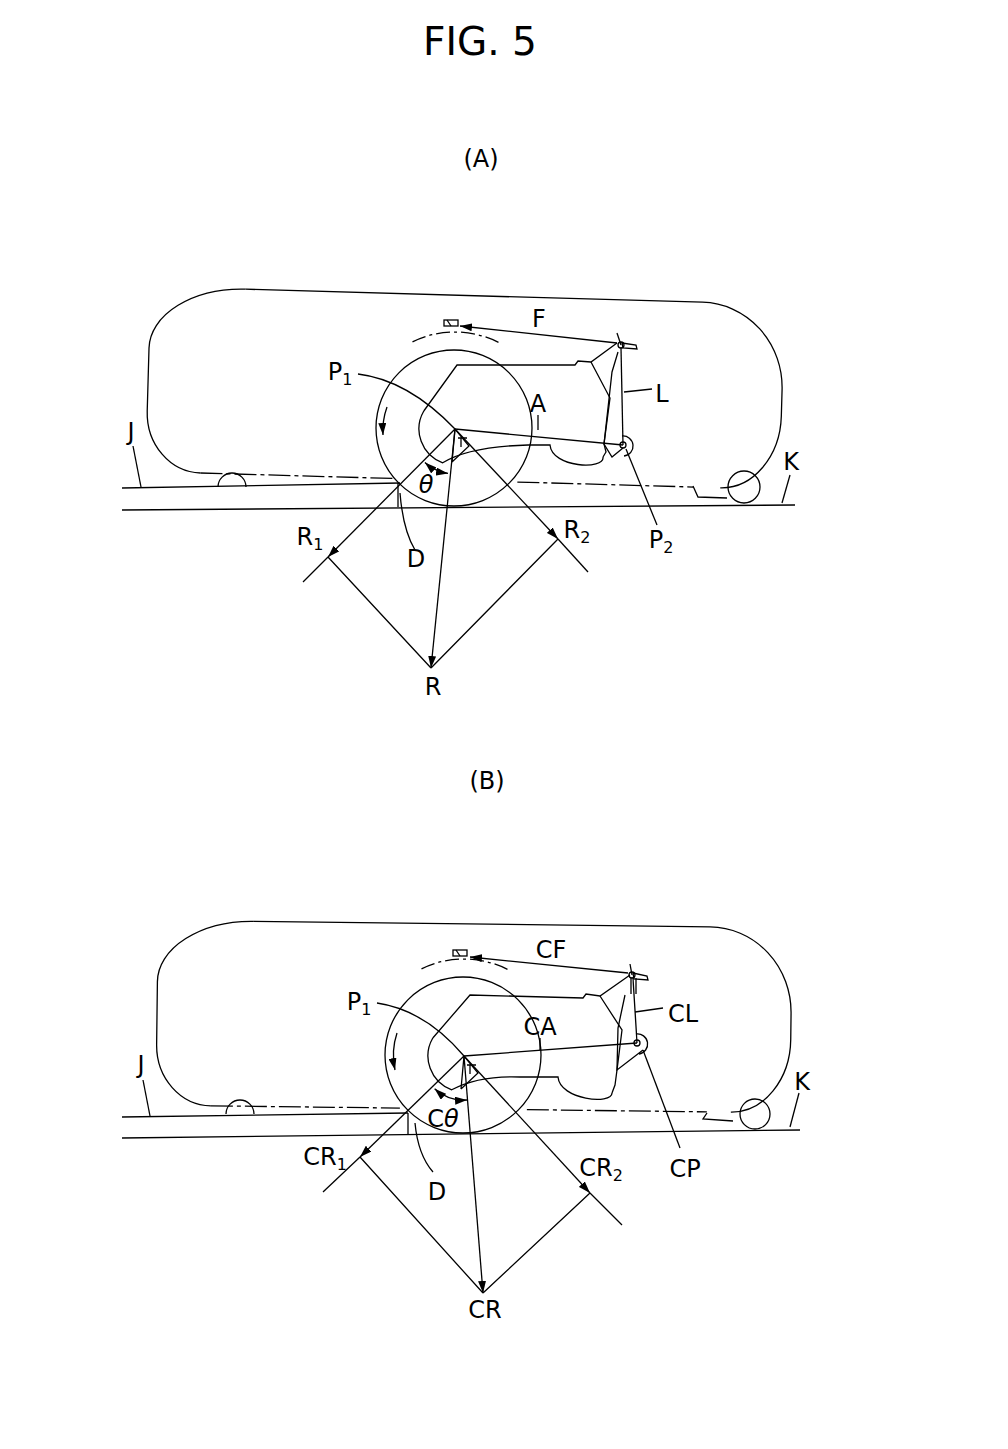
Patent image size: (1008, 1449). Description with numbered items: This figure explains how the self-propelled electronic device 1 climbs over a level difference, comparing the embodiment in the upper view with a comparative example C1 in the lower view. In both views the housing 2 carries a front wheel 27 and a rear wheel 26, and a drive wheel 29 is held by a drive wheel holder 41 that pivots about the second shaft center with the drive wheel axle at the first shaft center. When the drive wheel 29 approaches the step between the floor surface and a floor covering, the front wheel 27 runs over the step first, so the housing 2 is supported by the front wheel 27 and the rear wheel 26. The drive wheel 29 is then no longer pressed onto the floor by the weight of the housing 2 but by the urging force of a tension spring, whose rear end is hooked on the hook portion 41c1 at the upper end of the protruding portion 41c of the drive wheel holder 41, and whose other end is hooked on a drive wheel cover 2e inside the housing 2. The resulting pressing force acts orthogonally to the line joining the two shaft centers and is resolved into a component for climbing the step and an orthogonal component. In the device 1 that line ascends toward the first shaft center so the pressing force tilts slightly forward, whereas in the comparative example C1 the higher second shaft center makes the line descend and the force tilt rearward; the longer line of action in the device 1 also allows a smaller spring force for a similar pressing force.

The self-propelled electronic device 1 is at (480, 283).
The comparative example C1 is at (487, 903).
The housing 2 is at (246, 289).
The drive wheel cover 2e is at (422, 340).
The rear wheel 26 is at (746, 502).
The front wheel 27 is at (236, 486).
The drive wheel 29 is at (397, 374).
The drive wheel holder 41 is at (583, 464).
The protruding portion 41c is at (619, 338).
The hook portion 41c1 is at (631, 343).